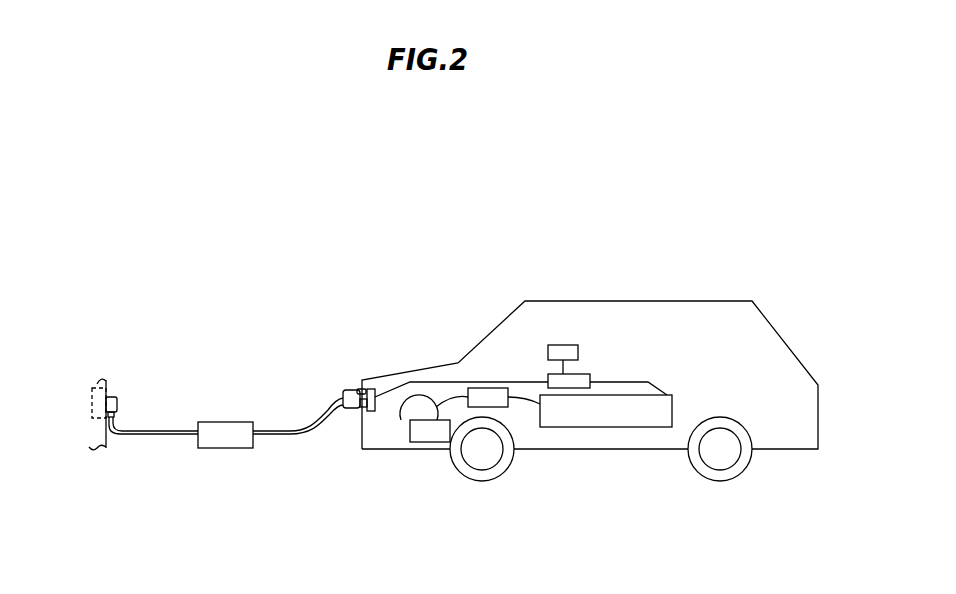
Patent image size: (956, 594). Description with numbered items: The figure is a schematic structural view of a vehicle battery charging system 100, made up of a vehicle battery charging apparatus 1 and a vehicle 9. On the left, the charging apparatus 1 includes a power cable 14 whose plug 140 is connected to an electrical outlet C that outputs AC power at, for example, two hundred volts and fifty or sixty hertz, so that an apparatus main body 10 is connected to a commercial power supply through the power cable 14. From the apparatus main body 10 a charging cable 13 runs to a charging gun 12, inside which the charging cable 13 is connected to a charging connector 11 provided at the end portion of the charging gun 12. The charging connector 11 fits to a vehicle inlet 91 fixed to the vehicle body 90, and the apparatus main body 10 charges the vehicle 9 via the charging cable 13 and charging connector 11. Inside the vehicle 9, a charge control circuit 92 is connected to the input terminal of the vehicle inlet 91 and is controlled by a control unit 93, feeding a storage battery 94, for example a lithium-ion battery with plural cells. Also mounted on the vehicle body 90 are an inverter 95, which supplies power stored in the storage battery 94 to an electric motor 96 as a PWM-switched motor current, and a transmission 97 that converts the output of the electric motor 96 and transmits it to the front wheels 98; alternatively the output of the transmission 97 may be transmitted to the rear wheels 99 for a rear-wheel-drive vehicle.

The vehicle battery charging system 100 is at (270, 238).
The vehicle battery charging apparatus 1 is at (170, 298).
The electrical outlet C is at (103, 388).
The plug 140 is at (112, 395).
The power cable 14 is at (180, 430).
The apparatus main body 10 is at (222, 422).
The charging cable 13 is at (288, 430).
The charging gun 12 is at (325, 405).
The charging connector 11 is at (352, 394).
The vehicle 9 is at (682, 255).
The vehicle body 90 is at (790, 452).
The vehicle inlet 91 is at (370, 389).
The control unit 93 is at (563, 345).
The charge control circuit 92 is at (583, 374).
The storage battery 94 is at (627, 428).
The inverter 95 is at (507, 408).
The electric motor 96 is at (402, 428).
The transmission 97 is at (430, 443).
The front wheels 98 is at (459, 471).
The rear wheels 99 is at (743, 470).